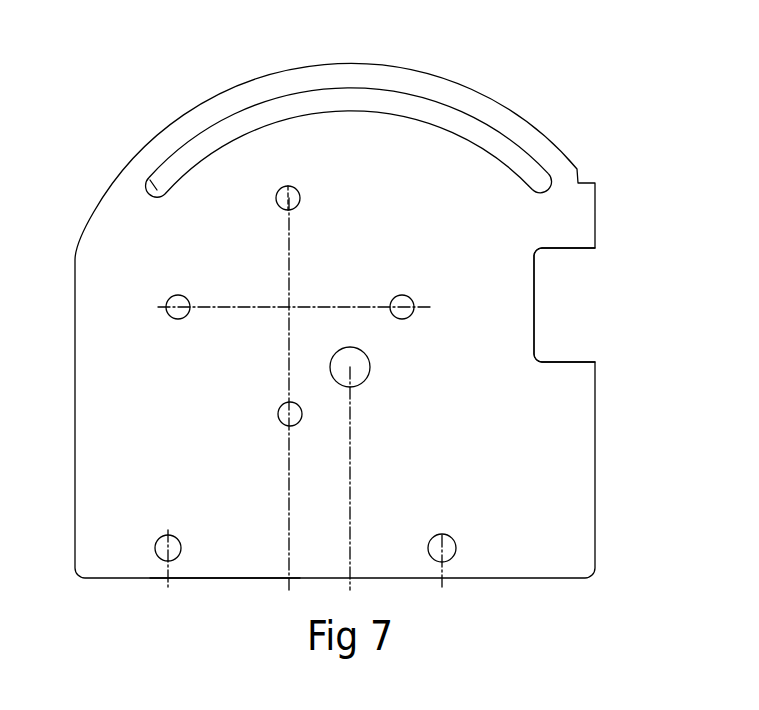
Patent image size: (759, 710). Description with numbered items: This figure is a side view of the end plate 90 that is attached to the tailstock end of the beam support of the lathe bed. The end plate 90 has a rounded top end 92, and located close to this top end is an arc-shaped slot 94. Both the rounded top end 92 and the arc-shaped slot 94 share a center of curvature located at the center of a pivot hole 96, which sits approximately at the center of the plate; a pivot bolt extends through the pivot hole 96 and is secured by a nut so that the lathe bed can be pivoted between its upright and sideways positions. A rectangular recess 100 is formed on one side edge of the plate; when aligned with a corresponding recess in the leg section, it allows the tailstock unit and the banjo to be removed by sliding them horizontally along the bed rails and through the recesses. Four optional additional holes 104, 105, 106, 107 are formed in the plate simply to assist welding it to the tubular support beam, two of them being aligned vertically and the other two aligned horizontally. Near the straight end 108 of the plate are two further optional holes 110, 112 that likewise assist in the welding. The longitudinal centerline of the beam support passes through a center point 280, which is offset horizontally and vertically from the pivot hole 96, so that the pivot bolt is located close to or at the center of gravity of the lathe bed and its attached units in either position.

The end plate 90 is at (133, 127).
The rounded top end 92 is at (227, 87).
The arc-shaped slot 94 is at (148, 180).
The pivot hole 96 is at (367, 381).
The rectangular recess 100 is at (575, 303).
The additional hole 104 is at (300, 190).
The additional hole 105 is at (403, 294).
The additional hole 106 is at (277, 413).
The additional hole 107 is at (183, 320).
The straight end 108 is at (223, 573).
The optional hole 110 is at (167, 536).
The optional hole 112 is at (453, 535).
The center point 280 is at (293, 305).